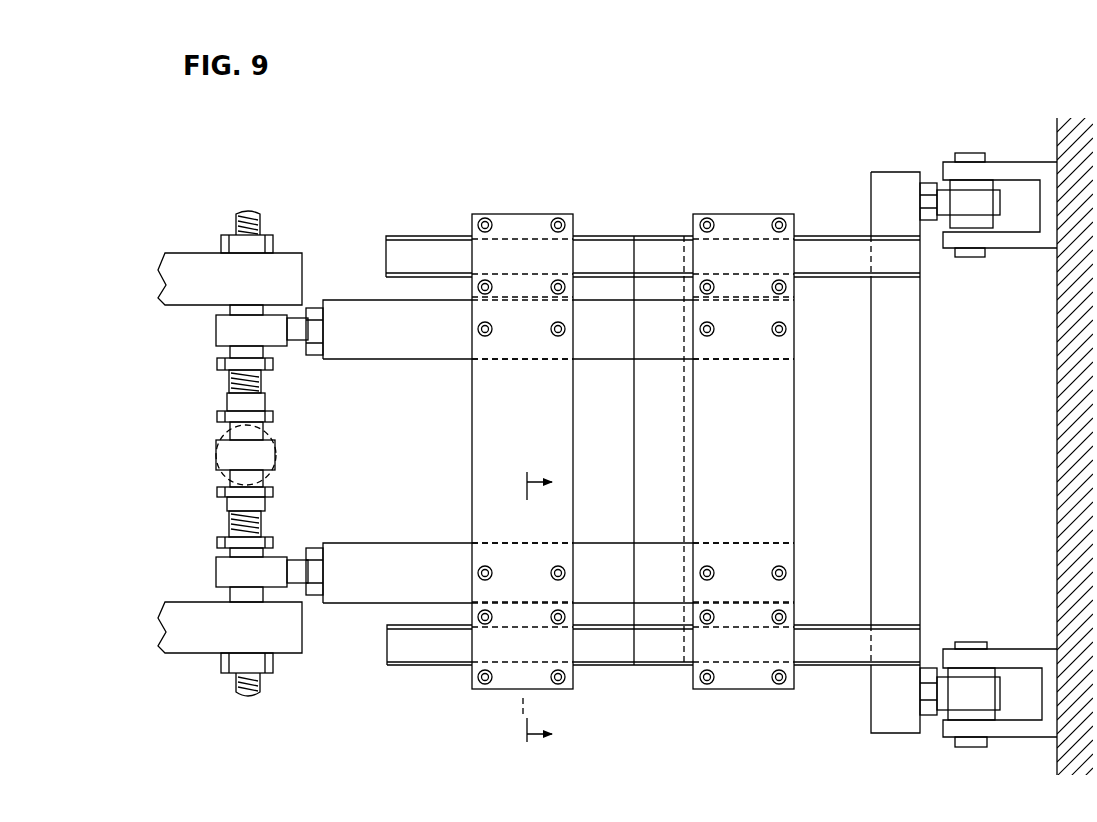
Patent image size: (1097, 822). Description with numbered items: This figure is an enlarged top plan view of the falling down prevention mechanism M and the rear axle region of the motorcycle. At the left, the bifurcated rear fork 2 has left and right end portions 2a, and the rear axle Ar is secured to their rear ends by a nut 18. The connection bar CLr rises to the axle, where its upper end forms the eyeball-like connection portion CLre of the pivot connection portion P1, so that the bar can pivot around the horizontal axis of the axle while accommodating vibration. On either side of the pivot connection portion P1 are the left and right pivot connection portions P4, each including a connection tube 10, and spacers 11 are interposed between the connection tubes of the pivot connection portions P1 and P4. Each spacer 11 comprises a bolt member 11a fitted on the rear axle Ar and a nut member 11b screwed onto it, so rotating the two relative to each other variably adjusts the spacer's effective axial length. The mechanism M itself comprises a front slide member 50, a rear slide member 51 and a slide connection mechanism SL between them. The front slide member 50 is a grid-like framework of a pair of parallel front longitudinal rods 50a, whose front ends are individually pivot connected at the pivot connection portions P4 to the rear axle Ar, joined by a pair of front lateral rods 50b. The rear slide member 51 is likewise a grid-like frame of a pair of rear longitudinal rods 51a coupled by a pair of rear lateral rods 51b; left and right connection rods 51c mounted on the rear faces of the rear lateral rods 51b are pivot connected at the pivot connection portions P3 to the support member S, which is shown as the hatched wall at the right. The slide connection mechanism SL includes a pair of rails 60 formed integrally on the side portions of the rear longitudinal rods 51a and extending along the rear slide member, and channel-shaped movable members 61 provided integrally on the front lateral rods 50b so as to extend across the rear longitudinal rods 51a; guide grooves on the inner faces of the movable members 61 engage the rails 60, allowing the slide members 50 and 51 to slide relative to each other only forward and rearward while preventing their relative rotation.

The rear fork 2 is at (193, 250).
The left and right end portions 2a is at (287, 262).
The rear axle Ar is at (230, 218).
The connection tube 10 is at (250, 305).
The nut 18 is at (226, 665).
The pivot connection portion P4 is at (222, 333).
The spacer 11 is at (122, 343).
The bolt member 11a is at (227, 383).
The nut member 11b is at (227, 402).
The pivot connection portion P1 is at (215, 446).
The eyeball-like connection portion CLre is at (275, 455).
The connection bar CLr is at (220, 475).
The front slide member 50 is at (530, 212).
The front longitudinal rods 50a is at (385, 320).
The front lateral rods 50b is at (565, 505).
The rear slide member 51 is at (613, 234).
The rear longitudinal rods 51a is at (472, 234).
The rear lateral rods 51b is at (642, 482).
The connection rods 51c is at (940, 197).
The slide connection mechanism SL is at (446, 246).
The movable members 61 is at (513, 302).
The rails 60 is at (852, 292).
The pivot connection portion P3 is at (968, 153).
The support member S is at (1045, 440).
The falling down prevention mechanism M is at (666, 692).